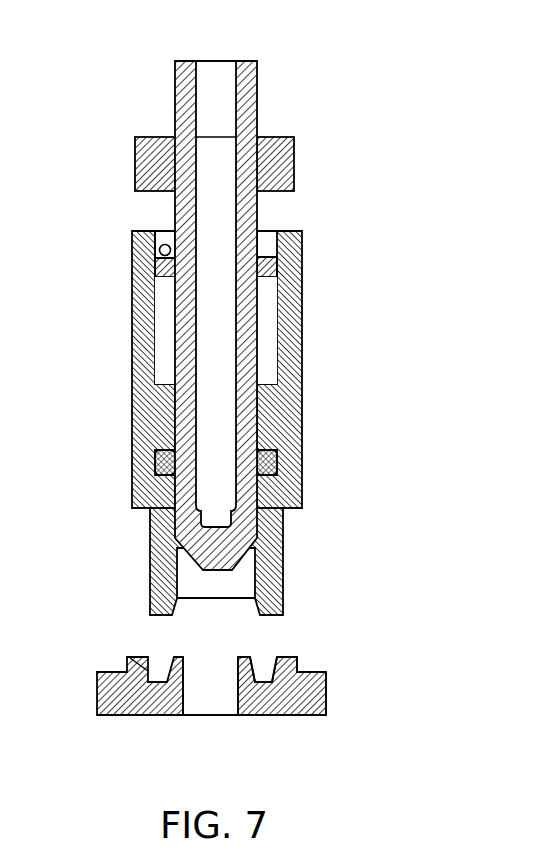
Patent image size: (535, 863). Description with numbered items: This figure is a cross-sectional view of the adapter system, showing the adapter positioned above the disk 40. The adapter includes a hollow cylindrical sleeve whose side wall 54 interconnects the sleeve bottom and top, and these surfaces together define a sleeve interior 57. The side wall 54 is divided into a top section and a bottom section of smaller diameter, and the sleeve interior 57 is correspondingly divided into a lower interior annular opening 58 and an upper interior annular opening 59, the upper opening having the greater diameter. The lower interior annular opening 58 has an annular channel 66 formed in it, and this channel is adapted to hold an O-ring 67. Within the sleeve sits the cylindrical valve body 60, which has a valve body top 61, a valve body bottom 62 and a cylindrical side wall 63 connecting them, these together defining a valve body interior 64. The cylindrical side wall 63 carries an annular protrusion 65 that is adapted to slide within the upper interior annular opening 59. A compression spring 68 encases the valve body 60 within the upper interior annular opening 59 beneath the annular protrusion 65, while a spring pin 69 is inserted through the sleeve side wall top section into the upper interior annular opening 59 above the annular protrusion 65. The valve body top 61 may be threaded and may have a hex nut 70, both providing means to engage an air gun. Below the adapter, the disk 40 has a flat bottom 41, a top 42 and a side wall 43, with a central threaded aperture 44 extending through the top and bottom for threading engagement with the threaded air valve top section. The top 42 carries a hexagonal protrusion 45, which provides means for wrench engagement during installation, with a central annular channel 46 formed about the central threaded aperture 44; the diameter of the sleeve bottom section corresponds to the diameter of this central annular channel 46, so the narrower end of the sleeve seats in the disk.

The disk 40 is at (97, 693).
The flat bottom 41 is at (248, 715).
The top 42 is at (305, 672).
The side wall 43 is at (326, 693).
The central threaded aperture 44 is at (203, 700).
The hexagonal protrusion 45 is at (280, 657).
The central annular channel 46 is at (127, 660).
The side wall 54 is at (133, 452).
The sleeve interior 57 is at (268, 337).
The lower interior annular opening 58 is at (242, 578).
The upper interior annular opening 59 is at (290, 232).
The cylindrical valve body 60 is at (312, 83).
The valve body top 61 is at (248, 61).
The valve body bottom 62 is at (177, 599).
The cylindrical side wall 63 is at (263, 440).
The valve body interior 64 is at (262, 246).
The annular protrusion 65 is at (158, 266).
The annular channel 66 is at (162, 478).
The O-ring 67 is at (272, 463).
The compression spring 68 is at (220, 298).
The spring pin 69 is at (135, 235).
The hex nut 70 is at (294, 165).